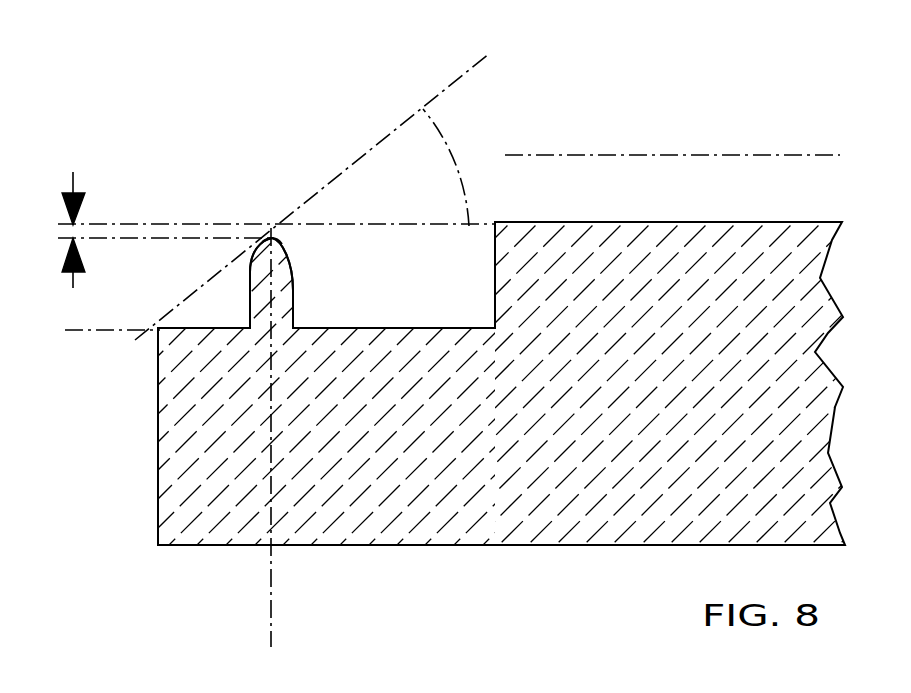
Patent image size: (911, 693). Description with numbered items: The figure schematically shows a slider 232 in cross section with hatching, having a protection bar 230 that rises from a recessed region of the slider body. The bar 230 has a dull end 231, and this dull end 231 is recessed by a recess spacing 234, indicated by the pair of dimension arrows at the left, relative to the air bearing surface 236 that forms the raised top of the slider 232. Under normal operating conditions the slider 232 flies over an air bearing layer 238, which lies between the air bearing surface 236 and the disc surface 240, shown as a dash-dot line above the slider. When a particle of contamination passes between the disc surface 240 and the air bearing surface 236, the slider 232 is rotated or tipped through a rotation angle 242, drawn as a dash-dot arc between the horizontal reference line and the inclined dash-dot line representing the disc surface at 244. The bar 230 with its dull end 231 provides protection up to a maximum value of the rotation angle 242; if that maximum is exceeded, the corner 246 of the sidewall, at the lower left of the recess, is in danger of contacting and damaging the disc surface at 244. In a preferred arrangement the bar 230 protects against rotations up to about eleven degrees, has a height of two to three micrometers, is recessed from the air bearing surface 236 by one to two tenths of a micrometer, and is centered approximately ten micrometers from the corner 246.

The bar 230 is at (294, 299).
The dull end 231 is at (288, 241).
The slider 232 is at (622, 393).
The recess spacing 234 is at (70, 212).
The air bearing surface 236 is at (497, 222).
The air bearing layer 238 is at (734, 204).
The disc surface 240 is at (700, 157).
The rotation angle 242 is at (447, 137).
The disc surface at tilted position 244 is at (447, 87).
The corner 246 is at (160, 328).